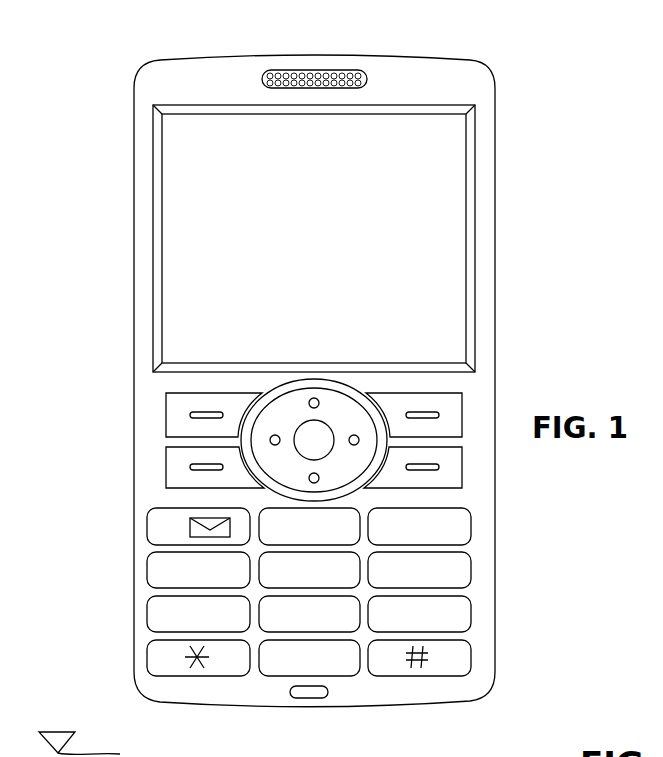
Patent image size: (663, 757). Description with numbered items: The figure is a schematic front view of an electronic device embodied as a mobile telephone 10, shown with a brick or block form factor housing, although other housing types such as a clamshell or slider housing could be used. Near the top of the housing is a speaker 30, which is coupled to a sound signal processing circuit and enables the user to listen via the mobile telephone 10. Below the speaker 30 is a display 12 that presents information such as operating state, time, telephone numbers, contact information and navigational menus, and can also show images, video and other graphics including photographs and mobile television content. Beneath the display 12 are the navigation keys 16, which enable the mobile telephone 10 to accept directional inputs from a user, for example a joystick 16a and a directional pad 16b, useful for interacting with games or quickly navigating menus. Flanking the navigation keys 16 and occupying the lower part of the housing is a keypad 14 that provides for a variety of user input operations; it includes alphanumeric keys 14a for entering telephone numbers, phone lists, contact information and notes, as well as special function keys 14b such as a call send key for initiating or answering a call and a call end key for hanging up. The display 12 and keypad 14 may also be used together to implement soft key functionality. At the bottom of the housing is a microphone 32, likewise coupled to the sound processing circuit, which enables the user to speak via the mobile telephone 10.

The mobile telephone 10 is at (103, 120).
The display 12 is at (180, 225).
The keypad 14 is at (218, 688).
The alphanumeric keys 14a is at (112, 585).
The special function keys 14b is at (518, 453).
The navigation keys 16 is at (321, 380).
The joystick 16a is at (352, 394).
The directional pad 16b is at (308, 414).
The speaker 30 is at (316, 70).
The microphone 32 is at (316, 698).